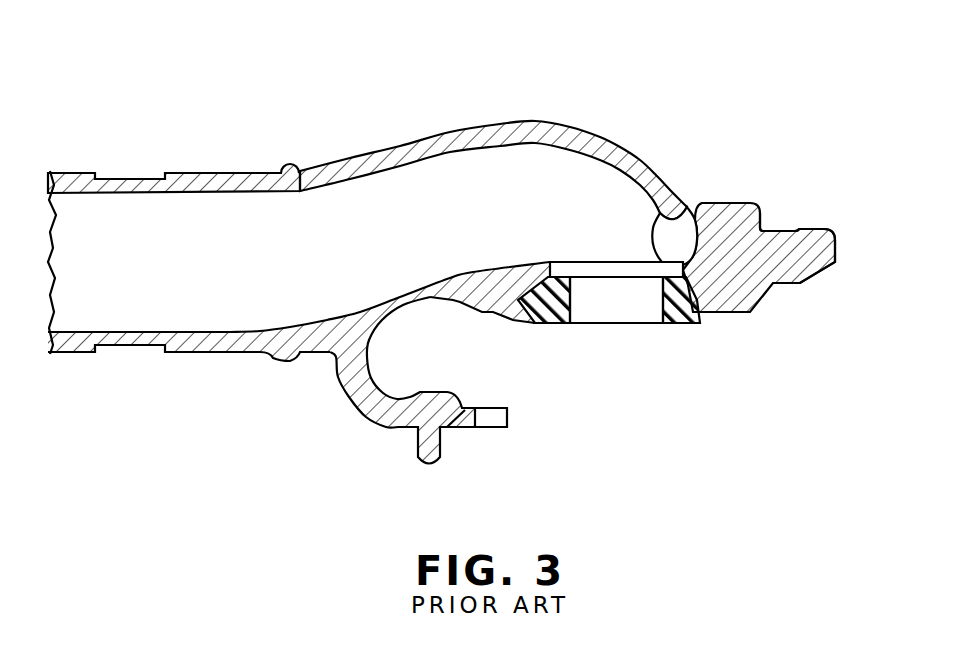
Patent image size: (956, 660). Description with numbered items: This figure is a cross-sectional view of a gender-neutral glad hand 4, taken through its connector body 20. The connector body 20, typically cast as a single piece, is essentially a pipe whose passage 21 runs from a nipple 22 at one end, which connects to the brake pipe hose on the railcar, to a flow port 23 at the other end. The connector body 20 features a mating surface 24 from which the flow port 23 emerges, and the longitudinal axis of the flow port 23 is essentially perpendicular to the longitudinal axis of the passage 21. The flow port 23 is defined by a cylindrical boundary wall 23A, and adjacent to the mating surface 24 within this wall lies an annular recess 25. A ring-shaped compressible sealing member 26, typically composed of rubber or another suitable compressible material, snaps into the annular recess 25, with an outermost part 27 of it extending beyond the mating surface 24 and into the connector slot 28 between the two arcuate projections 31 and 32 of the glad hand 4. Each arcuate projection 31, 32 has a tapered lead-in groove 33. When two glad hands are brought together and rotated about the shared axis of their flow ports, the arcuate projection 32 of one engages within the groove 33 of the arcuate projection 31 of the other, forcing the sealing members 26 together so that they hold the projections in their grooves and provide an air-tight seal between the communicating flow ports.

The glad hand 4 is at (682, 158).
The connector body 20 is at (547, 130).
The passage 21 is at (203, 207).
The nipple 22 is at (143, 342).
The flow port 23 is at (620, 312).
The cylindrical boundary wall 23A is at (687, 200).
The mating surface 24 is at (723, 314).
The annular recess 25 is at (675, 314).
The compressible sealing member 26 is at (553, 324).
The outermost part 27 is at (493, 303).
The connector slot 28 is at (488, 368).
The arcuate projection 31 is at (398, 412).
The arcuate projection 32 is at (804, 265).
The tapered lead-in groove 33 is at (783, 231).